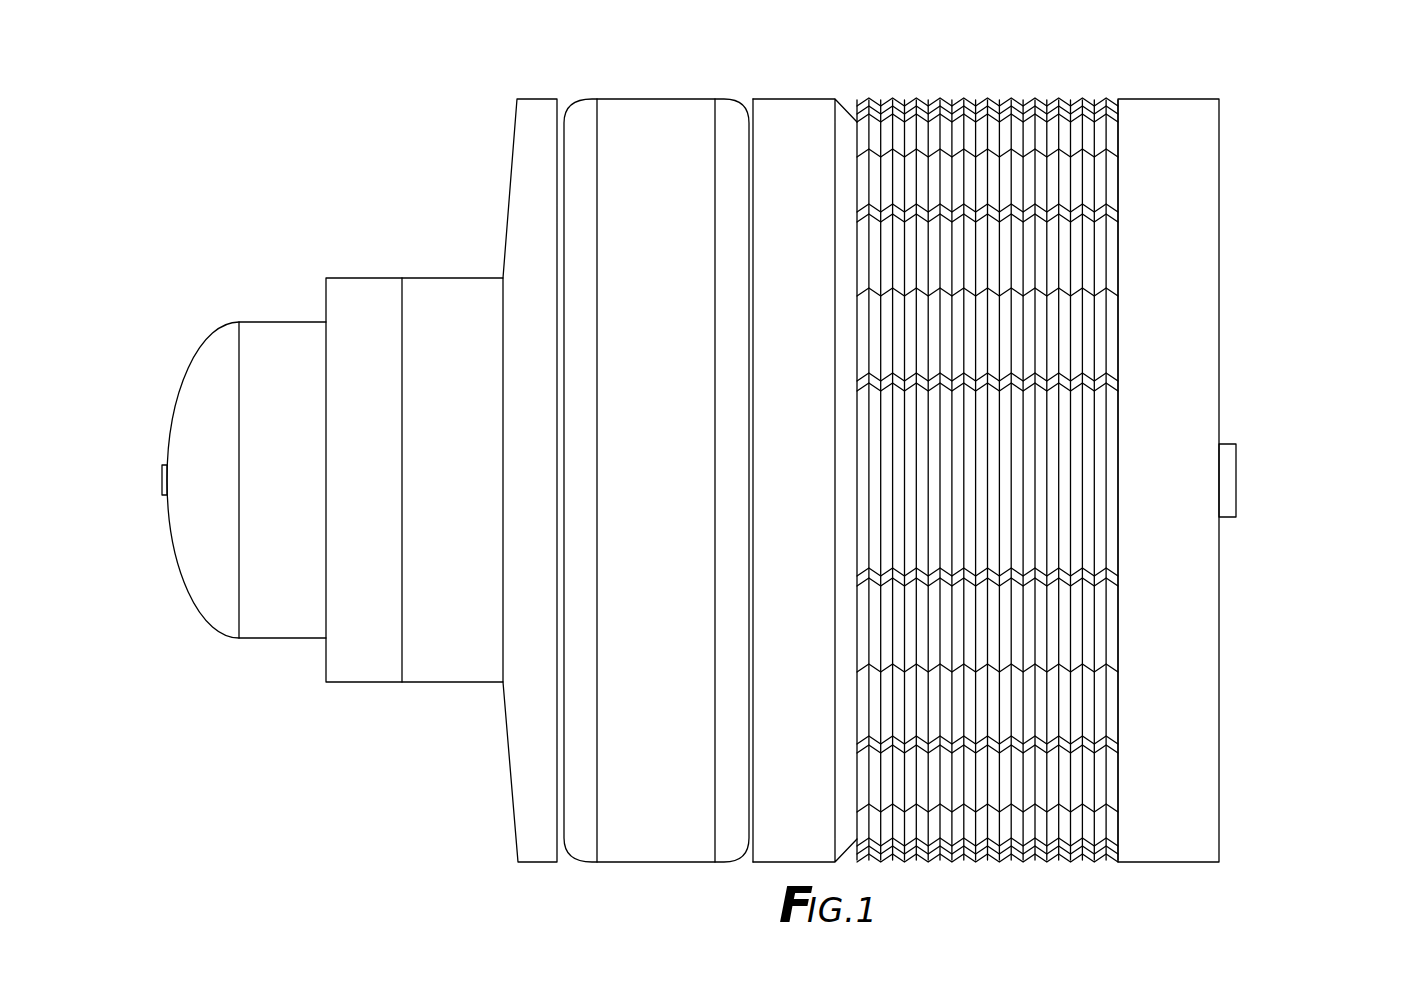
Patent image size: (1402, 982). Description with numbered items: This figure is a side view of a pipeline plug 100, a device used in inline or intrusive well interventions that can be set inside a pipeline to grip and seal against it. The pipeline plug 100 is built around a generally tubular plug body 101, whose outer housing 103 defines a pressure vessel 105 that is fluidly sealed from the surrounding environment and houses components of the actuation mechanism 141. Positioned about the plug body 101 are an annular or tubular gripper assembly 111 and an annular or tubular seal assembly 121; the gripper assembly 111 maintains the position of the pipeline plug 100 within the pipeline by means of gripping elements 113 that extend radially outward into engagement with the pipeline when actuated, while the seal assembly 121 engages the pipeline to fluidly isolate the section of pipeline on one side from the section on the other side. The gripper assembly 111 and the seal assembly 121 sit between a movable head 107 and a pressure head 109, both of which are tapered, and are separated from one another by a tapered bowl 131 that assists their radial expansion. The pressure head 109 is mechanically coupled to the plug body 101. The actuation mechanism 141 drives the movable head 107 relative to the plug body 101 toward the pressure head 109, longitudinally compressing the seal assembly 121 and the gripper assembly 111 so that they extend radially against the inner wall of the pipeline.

The pipeline plug 100 is at (263, 125).
The plug body 101 is at (307, 284).
The outer housing 103 is at (250, 320).
The pressure vessel 105 is at (213, 572).
The movable head 107 is at (1180, 98).
The pressure head 109 is at (537, 130).
The gripper assembly 111 is at (756, 77).
The gripping elements 113 is at (1097, 320).
The seal assembly 121 is at (567, 77).
The bowl 131 is at (753, 220).
The actuation mechanism 141 is at (1248, 480).